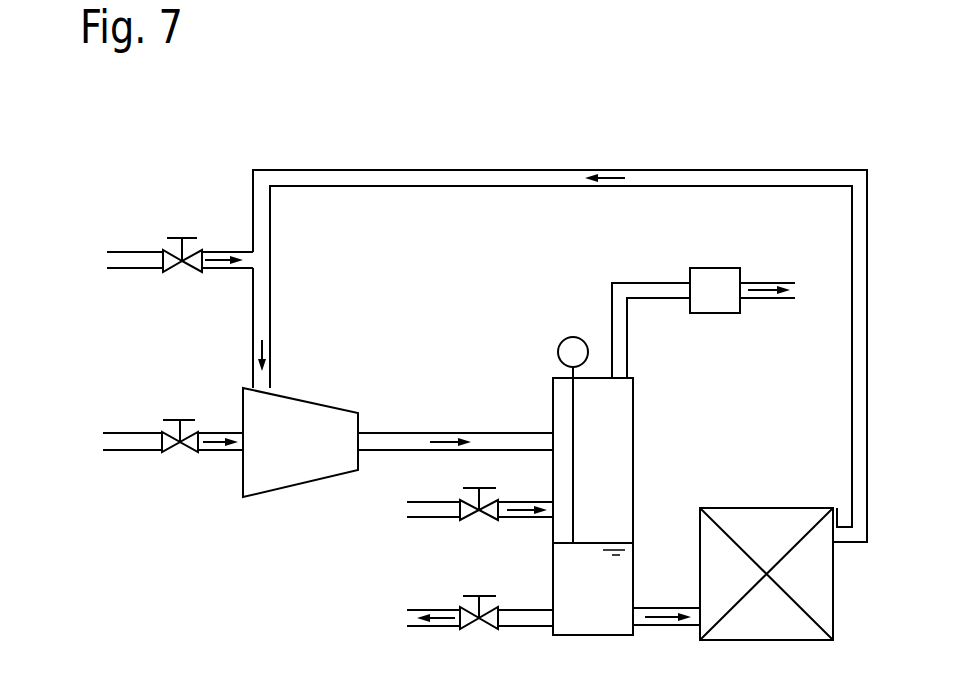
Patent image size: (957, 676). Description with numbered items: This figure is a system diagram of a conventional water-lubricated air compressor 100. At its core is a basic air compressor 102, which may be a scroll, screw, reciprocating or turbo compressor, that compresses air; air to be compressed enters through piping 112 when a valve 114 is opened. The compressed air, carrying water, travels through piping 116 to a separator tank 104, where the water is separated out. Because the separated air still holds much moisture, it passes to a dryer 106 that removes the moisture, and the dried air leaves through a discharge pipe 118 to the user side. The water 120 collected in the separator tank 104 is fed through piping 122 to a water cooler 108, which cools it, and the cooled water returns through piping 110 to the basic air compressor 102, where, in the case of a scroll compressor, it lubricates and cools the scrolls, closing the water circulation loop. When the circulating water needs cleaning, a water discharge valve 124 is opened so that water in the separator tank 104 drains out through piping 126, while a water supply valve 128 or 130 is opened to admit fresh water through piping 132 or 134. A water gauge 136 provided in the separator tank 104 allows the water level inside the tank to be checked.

The water-lubricated air compressor 100 is at (372, 124).
The basic air compressor 102 is at (318, 404).
The separator tank 104 is at (633, 432).
The dryer 106 is at (718, 268).
The water cooler 108 is at (758, 508).
The piping 110 is at (640, 170).
The piping 112 is at (137, 433).
The valve 114 is at (187, 420).
The piping 116 is at (447, 432).
The discharge pipe 118 is at (663, 298).
The water 120 is at (598, 550).
The piping 122 is at (665, 608).
The water discharge valve 124 is at (487, 596).
The piping 126 is at (440, 610).
The water supply valve 128 is at (485, 488).
The water supply valve 130 is at (188, 238).
The piping 132 is at (423, 502).
The piping 134 is at (130, 252).
The water gauge 136 is at (573, 337).